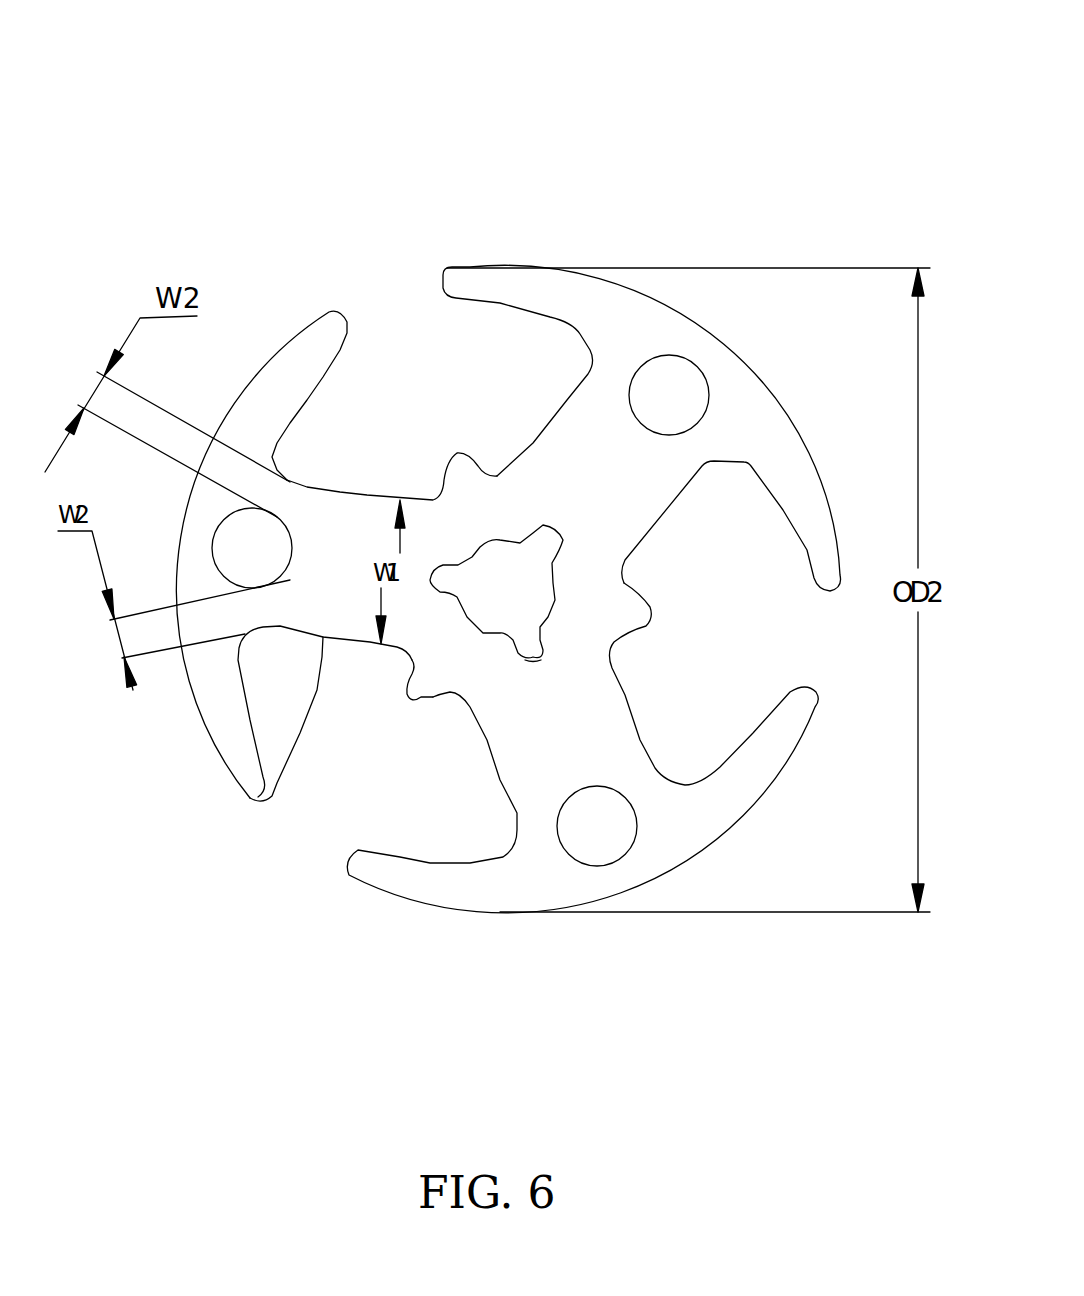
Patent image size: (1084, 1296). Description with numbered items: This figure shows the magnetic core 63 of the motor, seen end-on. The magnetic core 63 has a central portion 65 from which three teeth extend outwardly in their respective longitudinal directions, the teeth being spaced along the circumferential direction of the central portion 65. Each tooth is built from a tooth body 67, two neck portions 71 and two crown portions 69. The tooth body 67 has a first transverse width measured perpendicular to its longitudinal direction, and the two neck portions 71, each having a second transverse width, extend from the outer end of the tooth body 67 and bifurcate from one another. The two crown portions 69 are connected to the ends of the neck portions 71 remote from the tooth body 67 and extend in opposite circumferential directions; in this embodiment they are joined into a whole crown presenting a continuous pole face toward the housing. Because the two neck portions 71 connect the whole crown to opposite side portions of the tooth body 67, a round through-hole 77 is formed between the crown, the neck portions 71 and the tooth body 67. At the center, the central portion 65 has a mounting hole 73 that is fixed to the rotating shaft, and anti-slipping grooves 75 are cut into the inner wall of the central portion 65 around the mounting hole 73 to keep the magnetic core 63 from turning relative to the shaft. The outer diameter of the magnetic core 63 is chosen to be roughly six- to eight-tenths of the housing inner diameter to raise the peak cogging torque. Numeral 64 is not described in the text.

The magnetic core 63 is at (538, 58).
The notch 64 is at (413, 708).
The central portion 65 is at (500, 503).
The tooth body 67 is at (298, 776).
The crown portion 69 is at (295, 357).
The neck portion 71 is at (535, 830).
The mounting hole 73 is at (503, 588).
The anti-slipping groove 75 is at (532, 658).
The through-hole 77 is at (597, 825).